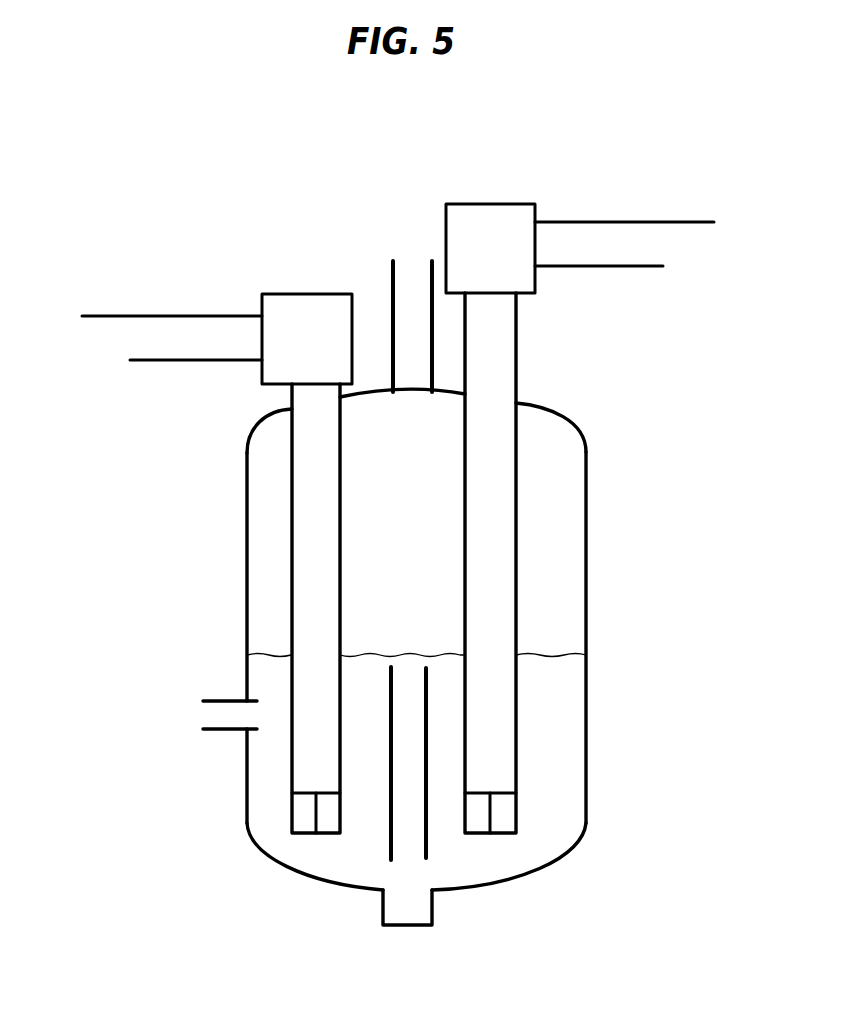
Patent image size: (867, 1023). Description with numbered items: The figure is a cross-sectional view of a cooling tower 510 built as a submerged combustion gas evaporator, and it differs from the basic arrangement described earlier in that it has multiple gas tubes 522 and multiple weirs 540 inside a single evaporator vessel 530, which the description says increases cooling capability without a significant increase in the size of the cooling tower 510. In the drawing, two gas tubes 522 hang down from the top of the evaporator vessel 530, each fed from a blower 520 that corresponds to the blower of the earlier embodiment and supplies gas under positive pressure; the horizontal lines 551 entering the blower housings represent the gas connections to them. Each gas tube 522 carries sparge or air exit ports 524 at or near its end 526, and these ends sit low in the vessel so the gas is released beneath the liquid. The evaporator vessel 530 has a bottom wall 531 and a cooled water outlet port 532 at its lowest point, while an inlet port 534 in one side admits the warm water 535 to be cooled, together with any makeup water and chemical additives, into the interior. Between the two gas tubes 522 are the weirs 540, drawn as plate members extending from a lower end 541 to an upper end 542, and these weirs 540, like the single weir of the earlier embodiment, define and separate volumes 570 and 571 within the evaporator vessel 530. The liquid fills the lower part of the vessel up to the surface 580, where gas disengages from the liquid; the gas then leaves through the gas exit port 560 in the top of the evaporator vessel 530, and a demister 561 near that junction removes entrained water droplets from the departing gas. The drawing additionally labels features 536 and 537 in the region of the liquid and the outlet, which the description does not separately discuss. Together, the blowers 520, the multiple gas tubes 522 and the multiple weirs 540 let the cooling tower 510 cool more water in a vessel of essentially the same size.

The cooling tower 510 is at (225, 622).
The first drive unit 520 is at (273, 363).
The gas tubes 522 is at (305, 522).
The tube end member 524 is at (290, 814).
The tube bottom 526 is at (300, 835).
The evaporator vessel 530 is at (588, 474).
The vessel bottom 531 is at (478, 893).
The outlet 532 is at (395, 908).
The side port 534 is at (205, 729).
The liquid level 535 is at (572, 673).
The drain opening 536 is at (389, 862).
The liquid surface 537 is at (382, 662).
The weirs 540 is at (391, 790).
The bottom region 541 is at (389, 866).
The tube upper end 542 is at (397, 665).
The supply lines 551 is at (140, 362).
The second drive unit with inlet pipes 560 is at (403, 273).
The second tube 561 is at (517, 440).
The interior space 570 is at (370, 843).
The upper space 571 is at (560, 738).
The liquid 580 is at (535, 650).